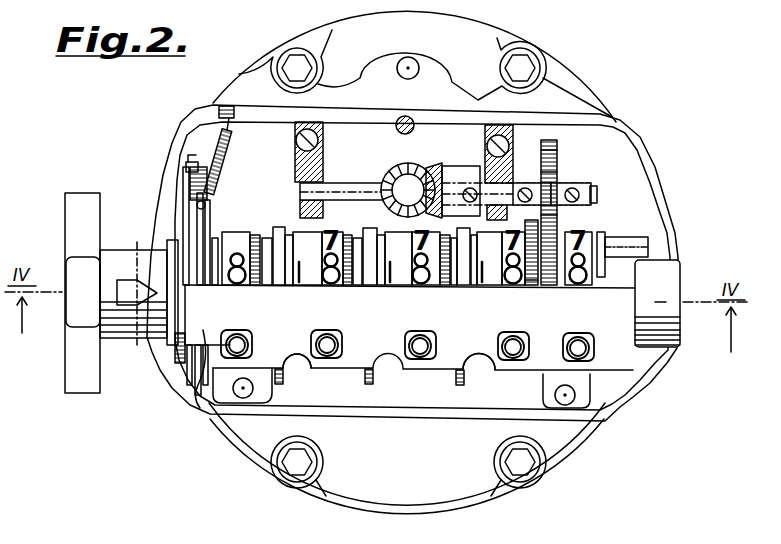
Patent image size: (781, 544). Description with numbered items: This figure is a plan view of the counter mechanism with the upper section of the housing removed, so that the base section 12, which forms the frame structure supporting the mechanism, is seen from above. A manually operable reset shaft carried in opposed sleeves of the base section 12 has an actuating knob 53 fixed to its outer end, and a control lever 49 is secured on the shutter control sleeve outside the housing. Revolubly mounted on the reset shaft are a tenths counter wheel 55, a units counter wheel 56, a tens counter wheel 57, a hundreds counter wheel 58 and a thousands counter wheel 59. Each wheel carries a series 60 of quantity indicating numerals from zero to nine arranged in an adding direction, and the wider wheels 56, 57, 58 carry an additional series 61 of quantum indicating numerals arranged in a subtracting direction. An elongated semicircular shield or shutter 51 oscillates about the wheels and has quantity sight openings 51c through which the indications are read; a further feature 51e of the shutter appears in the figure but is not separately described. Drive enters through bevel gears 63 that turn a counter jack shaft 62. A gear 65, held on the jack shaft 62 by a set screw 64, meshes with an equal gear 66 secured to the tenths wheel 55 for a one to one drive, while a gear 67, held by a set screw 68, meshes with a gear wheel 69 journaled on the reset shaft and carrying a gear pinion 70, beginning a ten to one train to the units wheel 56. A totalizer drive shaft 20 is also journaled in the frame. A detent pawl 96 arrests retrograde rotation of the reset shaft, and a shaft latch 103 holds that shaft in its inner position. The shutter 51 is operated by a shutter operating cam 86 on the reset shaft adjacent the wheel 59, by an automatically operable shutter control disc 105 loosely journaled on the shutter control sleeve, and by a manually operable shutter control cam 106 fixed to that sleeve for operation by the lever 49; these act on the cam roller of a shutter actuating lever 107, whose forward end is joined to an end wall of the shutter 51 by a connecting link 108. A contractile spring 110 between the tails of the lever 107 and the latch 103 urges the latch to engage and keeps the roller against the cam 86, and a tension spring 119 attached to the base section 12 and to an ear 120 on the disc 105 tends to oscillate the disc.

The base section 12 is at (657, 168).
The totalizer drive shaft 20 is at (411, 121).
The control lever 49 is at (127, 283).
The shield or shutter 51 is at (453, 334).
The plate notch 51e is at (400, 372).
The quantity sight openings 51c is at (505, 372).
The actuating knob 53 is at (72, 218).
The tenths counter wheel 55 is at (604, 242).
The units counter wheel 56 is at (497, 280).
The tens counter wheel 57 is at (387, 235).
The hundreds counter wheel 58 is at (298, 232).
The thousands counter wheel 59 is at (252, 232).
The series of quantity indicating numerals 60 is at (235, 284).
The series of quantum indicating numerals 61 is at (299, 284).
The counter jack shaft 62 is at (347, 186).
The bevel gears 63 is at (414, 176).
The set screw 64 is at (578, 194).
The gear 65 is at (558, 152).
The gear 66 is at (545, 248).
The gear 67 is at (545, 150).
The set screw 68 is at (545, 172).
The gear wheel 69 is at (548, 220).
The gear pinion 70 is at (552, 284).
The shutter operating cam 86 is at (204, 408).
The detent pawl 96 is at (652, 237).
The shaft latch 103 is at (182, 233).
The shutter control disc 105 is at (197, 402).
The shutter control cam 106 is at (188, 378).
The shutter actuating lever 107 is at (196, 200).
The connecting link 108 is at (176, 361).
The contractile spring 110 is at (186, 168).
The tension spring 119 is at (231, 156).
The ear 120 is at (207, 208).